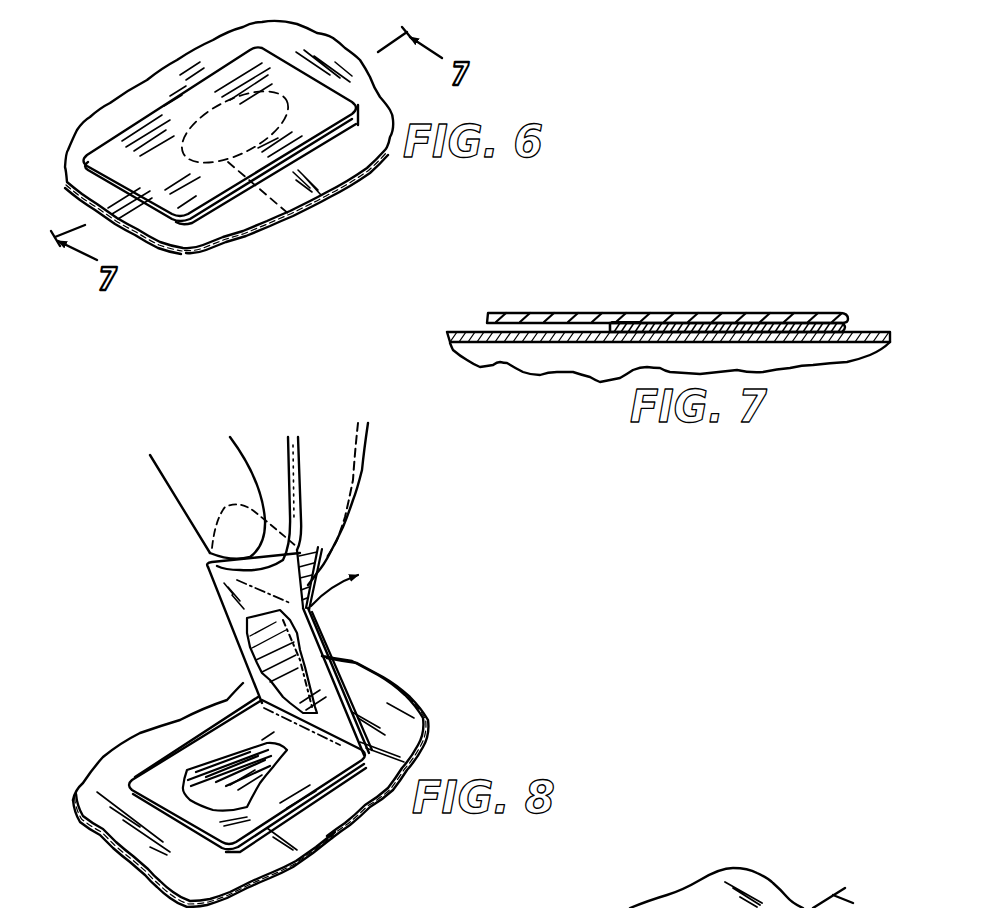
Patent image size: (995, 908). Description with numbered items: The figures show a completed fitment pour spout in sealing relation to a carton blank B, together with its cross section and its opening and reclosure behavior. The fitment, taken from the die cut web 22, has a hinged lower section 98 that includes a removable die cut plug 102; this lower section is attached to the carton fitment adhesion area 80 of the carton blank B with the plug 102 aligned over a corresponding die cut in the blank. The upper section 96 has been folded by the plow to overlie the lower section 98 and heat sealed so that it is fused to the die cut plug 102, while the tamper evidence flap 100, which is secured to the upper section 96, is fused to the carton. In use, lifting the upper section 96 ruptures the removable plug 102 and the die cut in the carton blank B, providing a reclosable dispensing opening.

In FIG. 6, the die cut web 22 is at (170, 118).
In FIG. 7, the die cut web 22 is at (688, 312).
In FIG. 8, the die cut web 22 is at (395, 722).
In FIG. 6, the carton blank B is at (72, 163).
In FIG. 7, the carton blank B is at (447, 343).
In FIG. 8, the carton blank B is at (83, 803).
In FIG. 7, the carton fitment adhesion area 80 is at (784, 343).
In FIG. 8, the carton fitment adhesion area 80 is at (211, 762).
In FIG. 7, the upper section 96 is at (736, 321).
In FIG. 8, the upper section 96 is at (323, 657).
In FIG. 7, the hinged lower section 98 is at (637, 333).
In FIG. 8, the hinged lower section 98 is at (162, 767).
In FIG. 6, the tamper evidence flap 100 is at (187, 201).
In FIG. 7, the tamper evidence flap 100 is at (548, 312).
In FIG. 8, the tamper evidence flap 100 is at (318, 548).
In FIG. 6, the die cut plug 102 is at (290, 215).
In FIG. 7, the die cut plug 102 is at (800, 324).
In FIG. 8, the die cut plug 102 is at (260, 647).